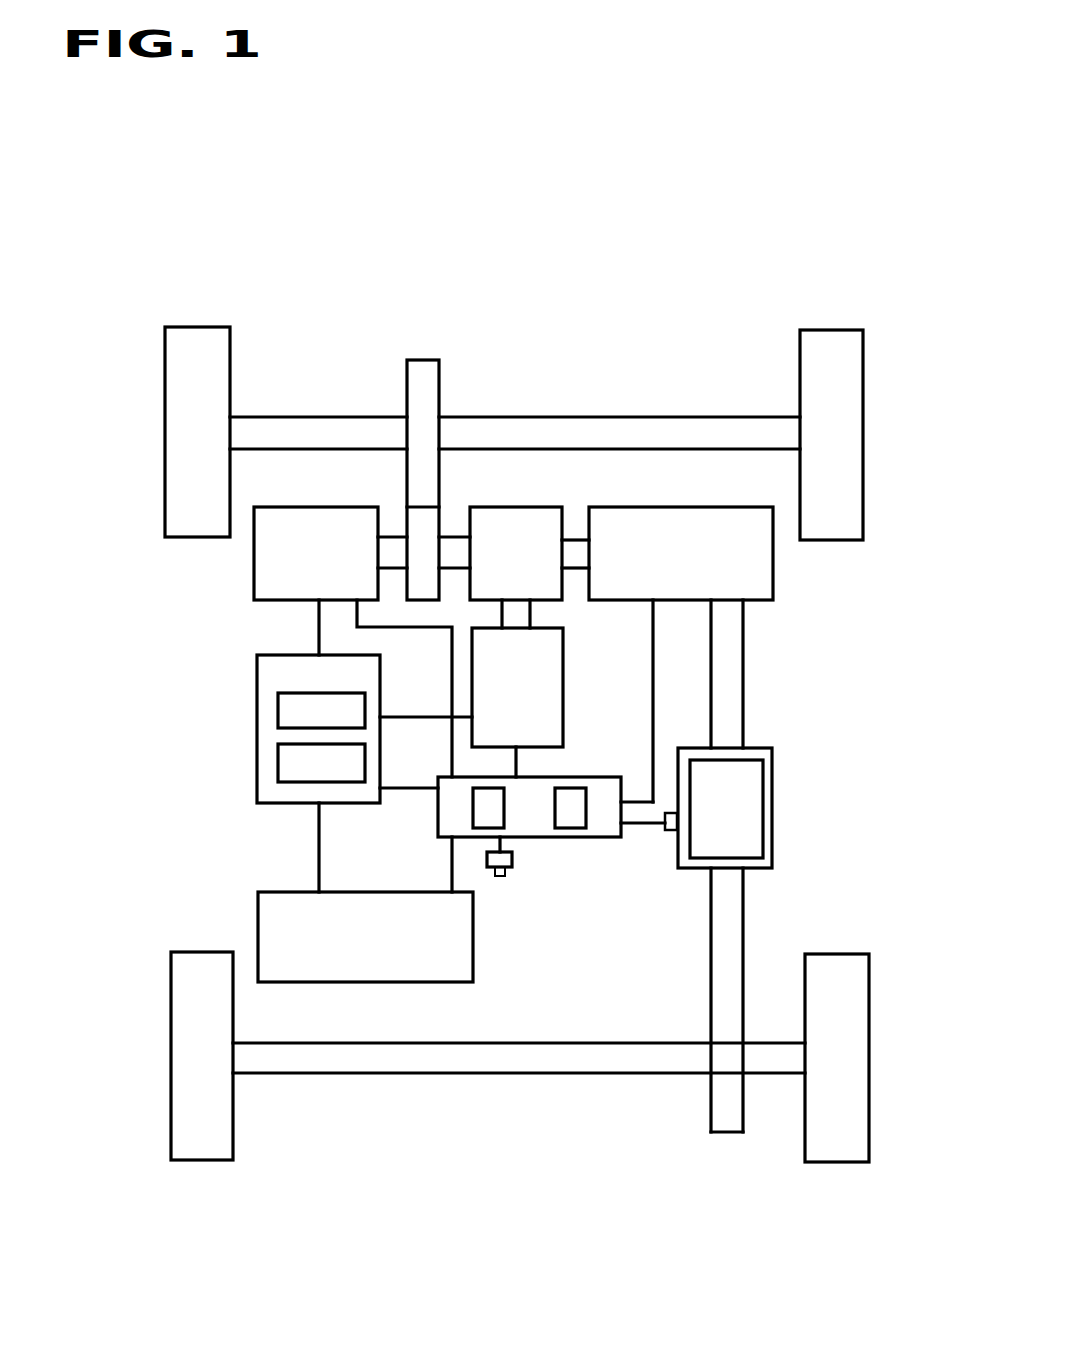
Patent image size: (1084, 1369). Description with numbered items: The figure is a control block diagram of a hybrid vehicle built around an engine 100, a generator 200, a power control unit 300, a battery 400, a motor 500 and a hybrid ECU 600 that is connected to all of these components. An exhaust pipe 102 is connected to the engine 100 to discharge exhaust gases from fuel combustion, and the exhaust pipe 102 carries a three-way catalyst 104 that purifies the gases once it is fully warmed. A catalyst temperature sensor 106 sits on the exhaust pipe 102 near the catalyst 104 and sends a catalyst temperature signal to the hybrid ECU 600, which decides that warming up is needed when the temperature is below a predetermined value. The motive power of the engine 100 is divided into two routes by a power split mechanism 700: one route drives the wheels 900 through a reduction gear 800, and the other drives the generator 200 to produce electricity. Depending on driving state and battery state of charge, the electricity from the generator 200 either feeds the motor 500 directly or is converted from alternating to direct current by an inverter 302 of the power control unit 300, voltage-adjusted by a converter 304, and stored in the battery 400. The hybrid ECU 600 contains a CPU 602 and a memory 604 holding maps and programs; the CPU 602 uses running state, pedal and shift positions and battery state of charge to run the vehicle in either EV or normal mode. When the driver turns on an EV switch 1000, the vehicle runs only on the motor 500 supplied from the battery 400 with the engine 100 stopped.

The engine 100 is at (774, 577).
The exhaust pipe 102 is at (744, 688).
The catalyst 104 is at (773, 800).
The catalyst temperature sensor 106 is at (669, 833).
The generator 200 is at (564, 684).
The power control unit 300 is at (272, 729).
The inverter 302 is at (278, 706).
The converter 304 is at (278, 762).
The battery 400 is at (474, 960).
The motor 500 is at (253, 583).
The hybrid ECU 600 is at (499, 819).
The CPU 602 is at (472, 816).
The memory 604 is at (574, 788).
The power split mechanism 700 is at (523, 507).
The reduction gear 800 is at (433, 348).
The wheels 900 is at (231, 347).
The EV switch 1000 is at (500, 878).